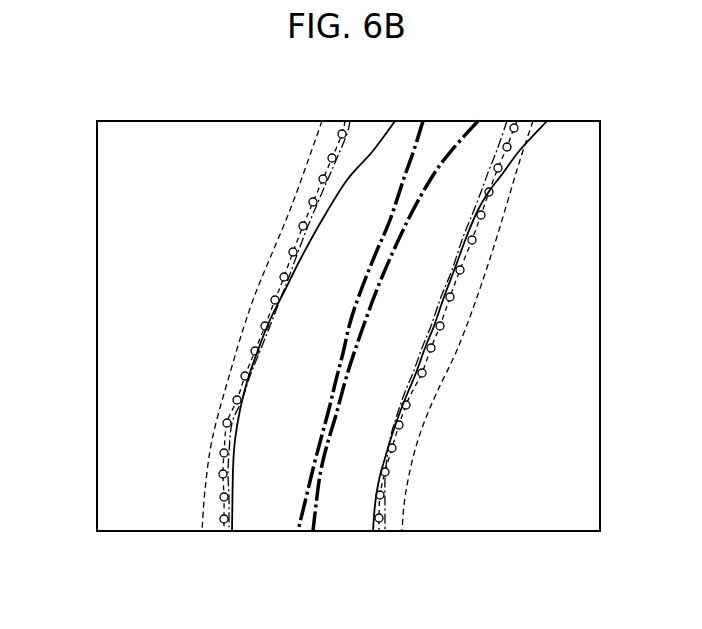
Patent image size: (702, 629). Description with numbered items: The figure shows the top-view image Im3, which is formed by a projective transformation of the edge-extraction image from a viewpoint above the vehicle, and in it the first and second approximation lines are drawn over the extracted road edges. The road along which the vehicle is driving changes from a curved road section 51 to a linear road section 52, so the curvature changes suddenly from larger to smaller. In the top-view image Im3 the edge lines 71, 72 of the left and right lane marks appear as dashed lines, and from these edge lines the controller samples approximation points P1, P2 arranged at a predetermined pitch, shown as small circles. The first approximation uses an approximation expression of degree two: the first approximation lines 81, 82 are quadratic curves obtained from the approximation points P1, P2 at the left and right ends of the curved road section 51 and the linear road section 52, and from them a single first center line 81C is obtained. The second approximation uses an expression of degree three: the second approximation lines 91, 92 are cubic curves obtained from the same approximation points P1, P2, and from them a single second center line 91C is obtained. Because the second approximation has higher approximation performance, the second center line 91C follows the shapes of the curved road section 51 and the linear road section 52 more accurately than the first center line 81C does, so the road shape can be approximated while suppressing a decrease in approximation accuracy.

The top-view image Im3 is at (97, 134).
The edge line 71 is at (209, 513).
The second approximation line 91 is at (340, 128).
The first approximation line 81 is at (365, 152).
The linear road section 52 is at (405, 140).
The second center line 91C is at (417, 155).
The first center line 81C is at (455, 145).
The second approximation line 92 is at (506, 133).
The first approximation line 82 is at (522, 150).
The edge line 72 is at (485, 222).
The approximation points P1 is at (245, 377).
The approximation points P2 is at (422, 373).
The curved road section 51 is at (277, 517).